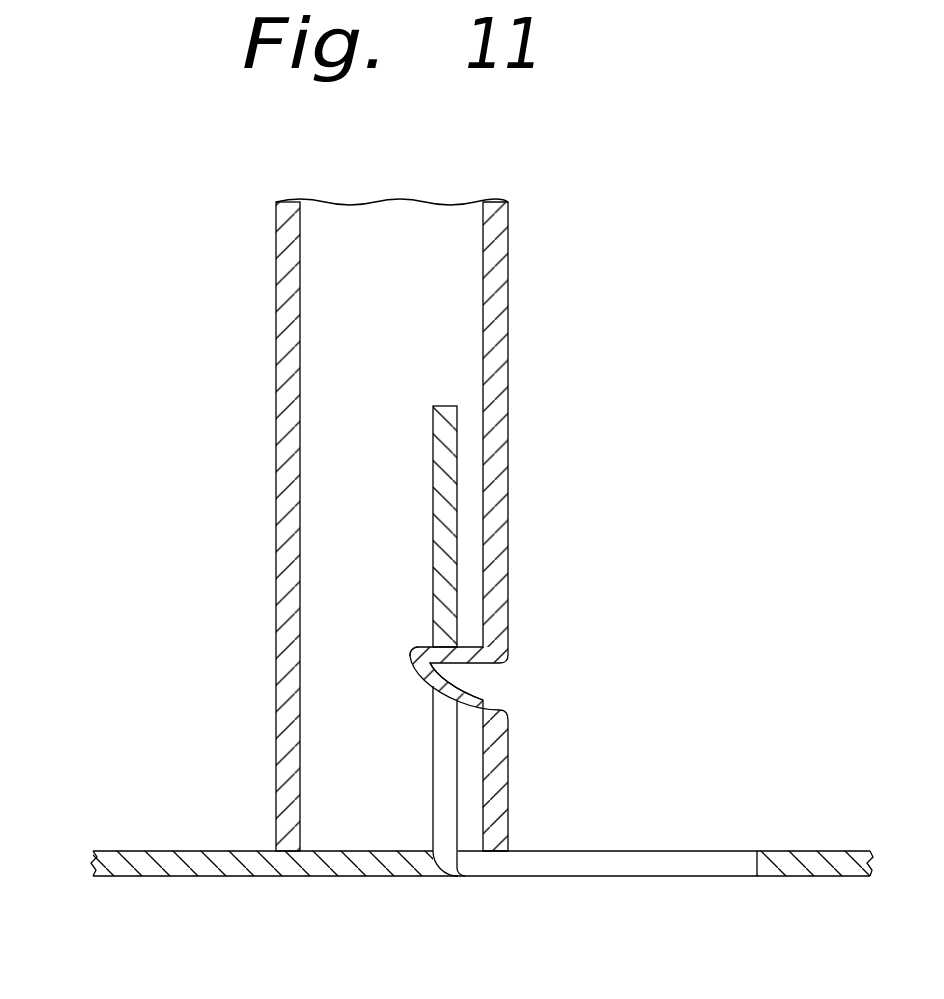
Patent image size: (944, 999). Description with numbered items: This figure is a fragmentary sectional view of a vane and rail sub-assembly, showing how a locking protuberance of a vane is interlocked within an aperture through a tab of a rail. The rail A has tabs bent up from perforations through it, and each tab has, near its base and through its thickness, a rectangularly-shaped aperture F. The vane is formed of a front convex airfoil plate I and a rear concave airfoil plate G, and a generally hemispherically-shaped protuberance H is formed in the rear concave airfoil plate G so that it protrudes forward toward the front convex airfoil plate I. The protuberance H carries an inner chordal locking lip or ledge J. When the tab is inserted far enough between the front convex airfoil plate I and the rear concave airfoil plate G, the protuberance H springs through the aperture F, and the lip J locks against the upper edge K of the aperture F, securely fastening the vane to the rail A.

The front convex airfoil plate I is at (276, 317).
The rear concave airfoil plate G is at (508, 290).
The upper edge of aperture K is at (443, 645).
The inner chordal locking lip J is at (410, 653).
The protuberance H is at (446, 690).
The rail A is at (155, 850).
The aperture F is at (453, 874).